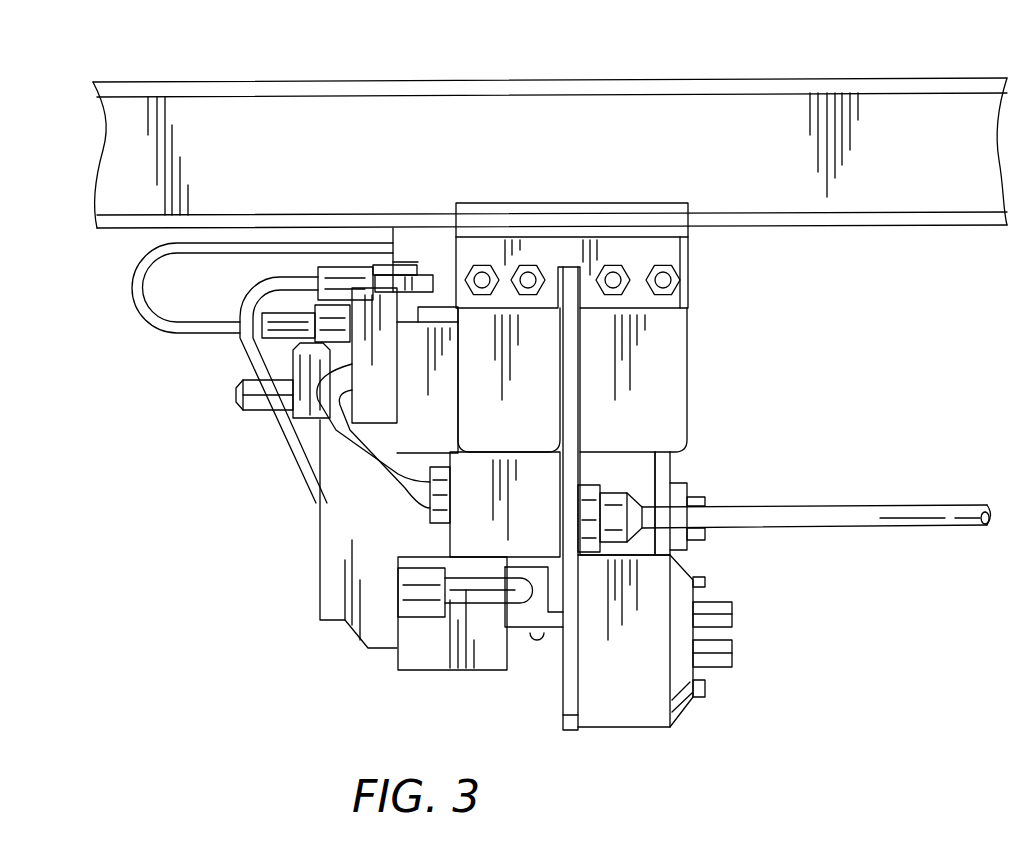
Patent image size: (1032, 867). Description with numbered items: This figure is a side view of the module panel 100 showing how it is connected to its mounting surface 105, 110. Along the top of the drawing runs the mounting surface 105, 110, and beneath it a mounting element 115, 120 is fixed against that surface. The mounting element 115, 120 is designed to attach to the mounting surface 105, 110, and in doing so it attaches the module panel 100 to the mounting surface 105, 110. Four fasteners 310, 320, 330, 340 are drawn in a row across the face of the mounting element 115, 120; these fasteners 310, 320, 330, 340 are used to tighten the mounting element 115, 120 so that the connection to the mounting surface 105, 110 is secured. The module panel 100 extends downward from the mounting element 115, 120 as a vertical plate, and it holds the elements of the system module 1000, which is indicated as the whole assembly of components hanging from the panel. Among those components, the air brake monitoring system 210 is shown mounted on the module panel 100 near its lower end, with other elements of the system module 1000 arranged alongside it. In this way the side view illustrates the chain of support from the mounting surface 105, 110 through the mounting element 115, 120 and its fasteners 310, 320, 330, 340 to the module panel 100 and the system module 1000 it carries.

The module panel 100 is at (570, 688).
The mounting surface 105 is at (550, 128).
The mounting surface 110 is at (252, 152).
The mounting element 115 is at (505, 231).
The mounting element 120 is at (477, 218).
The air brake monitoring system 210 is at (647, 688).
The fastener 310 is at (482, 278).
The fastener 320 is at (528, 278).
The fastener 330 is at (613, 278).
The fastener 340 is at (663, 278).
The system module 1000 is at (270, 604).